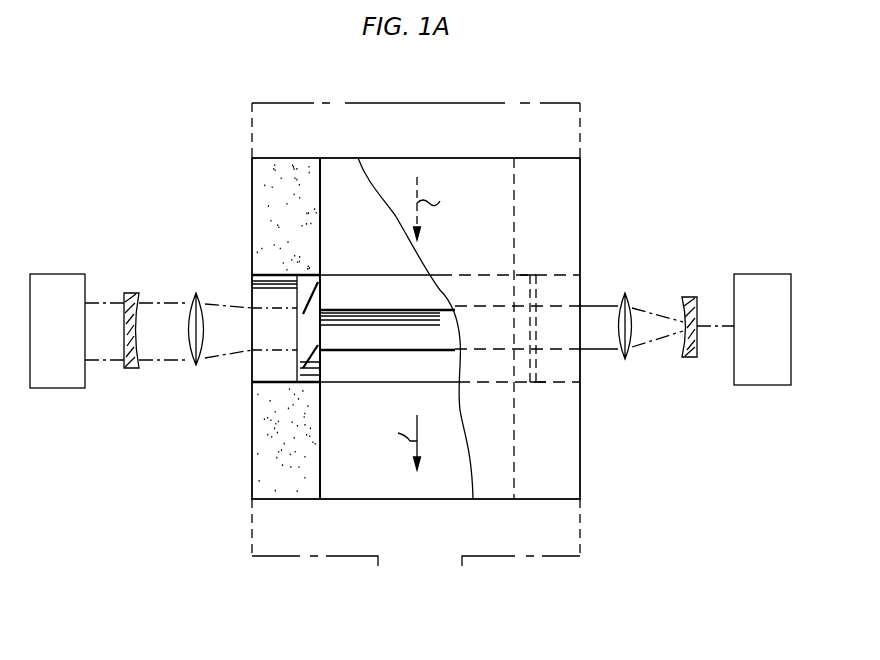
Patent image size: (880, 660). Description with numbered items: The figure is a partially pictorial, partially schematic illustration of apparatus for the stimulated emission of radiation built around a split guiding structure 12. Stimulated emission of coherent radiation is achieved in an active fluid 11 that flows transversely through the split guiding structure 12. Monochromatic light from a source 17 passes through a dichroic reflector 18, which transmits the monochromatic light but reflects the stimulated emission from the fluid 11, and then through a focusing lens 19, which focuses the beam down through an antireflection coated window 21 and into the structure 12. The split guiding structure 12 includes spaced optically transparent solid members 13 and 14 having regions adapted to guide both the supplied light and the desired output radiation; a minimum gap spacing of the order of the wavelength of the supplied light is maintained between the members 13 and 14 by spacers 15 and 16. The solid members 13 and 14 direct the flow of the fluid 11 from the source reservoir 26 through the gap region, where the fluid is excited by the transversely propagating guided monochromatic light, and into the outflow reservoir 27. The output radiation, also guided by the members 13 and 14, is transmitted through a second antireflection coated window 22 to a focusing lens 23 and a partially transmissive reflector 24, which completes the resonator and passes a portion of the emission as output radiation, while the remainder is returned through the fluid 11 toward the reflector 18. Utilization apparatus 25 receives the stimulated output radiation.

The active fluid 11 is at (333, 184).
The split guiding structure 12 is at (233, 447).
The optically transparent solid member 13 is at (497, 242).
The optically transparent solid member 14 is at (456, 445).
The spacer 15 is at (238, 494).
The spacer 16 is at (582, 175).
The monochromatic light source 17 is at (70, 378).
The dichroic reflector 18 is at (132, 292).
The focusing lens 19 is at (196, 292).
The window 21 is at (318, 374).
The second antireflection coated window 22 is at (537, 378).
The focusing lens 23 is at (626, 297).
The partially transmissive reflector 24 is at (690, 300).
The utilization apparatus 25 is at (762, 382).
The source reservoir 26 is at (582, 138).
The outflow reservoir 27 is at (582, 545).